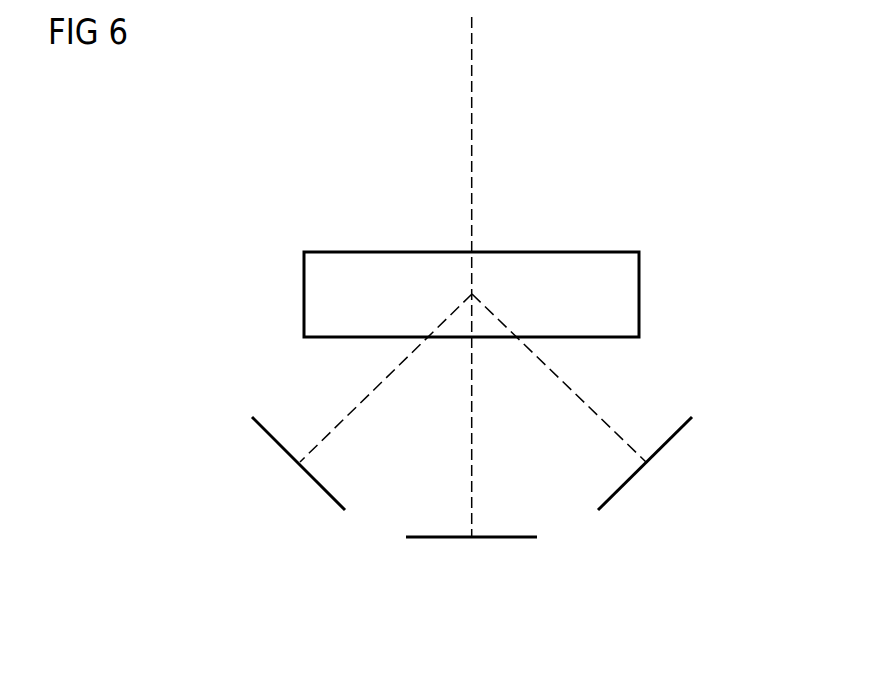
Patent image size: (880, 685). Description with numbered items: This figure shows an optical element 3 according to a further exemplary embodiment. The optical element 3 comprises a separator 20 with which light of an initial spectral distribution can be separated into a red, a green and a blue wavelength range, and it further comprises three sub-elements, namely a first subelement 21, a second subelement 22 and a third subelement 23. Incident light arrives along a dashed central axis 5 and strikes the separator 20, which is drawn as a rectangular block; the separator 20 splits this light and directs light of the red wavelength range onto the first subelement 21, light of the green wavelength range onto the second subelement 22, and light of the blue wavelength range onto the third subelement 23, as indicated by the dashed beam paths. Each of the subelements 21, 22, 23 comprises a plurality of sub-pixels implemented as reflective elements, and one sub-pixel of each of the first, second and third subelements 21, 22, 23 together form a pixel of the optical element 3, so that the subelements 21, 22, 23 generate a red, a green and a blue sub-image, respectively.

The optical element 3 is at (687, 70).
The optical axis 5 is at (472, 88).
The separator 20 is at (630, 303).
The first subelement 21 is at (670, 442).
The second subelement 22 is at (508, 540).
The third subelement 23 is at (273, 442).